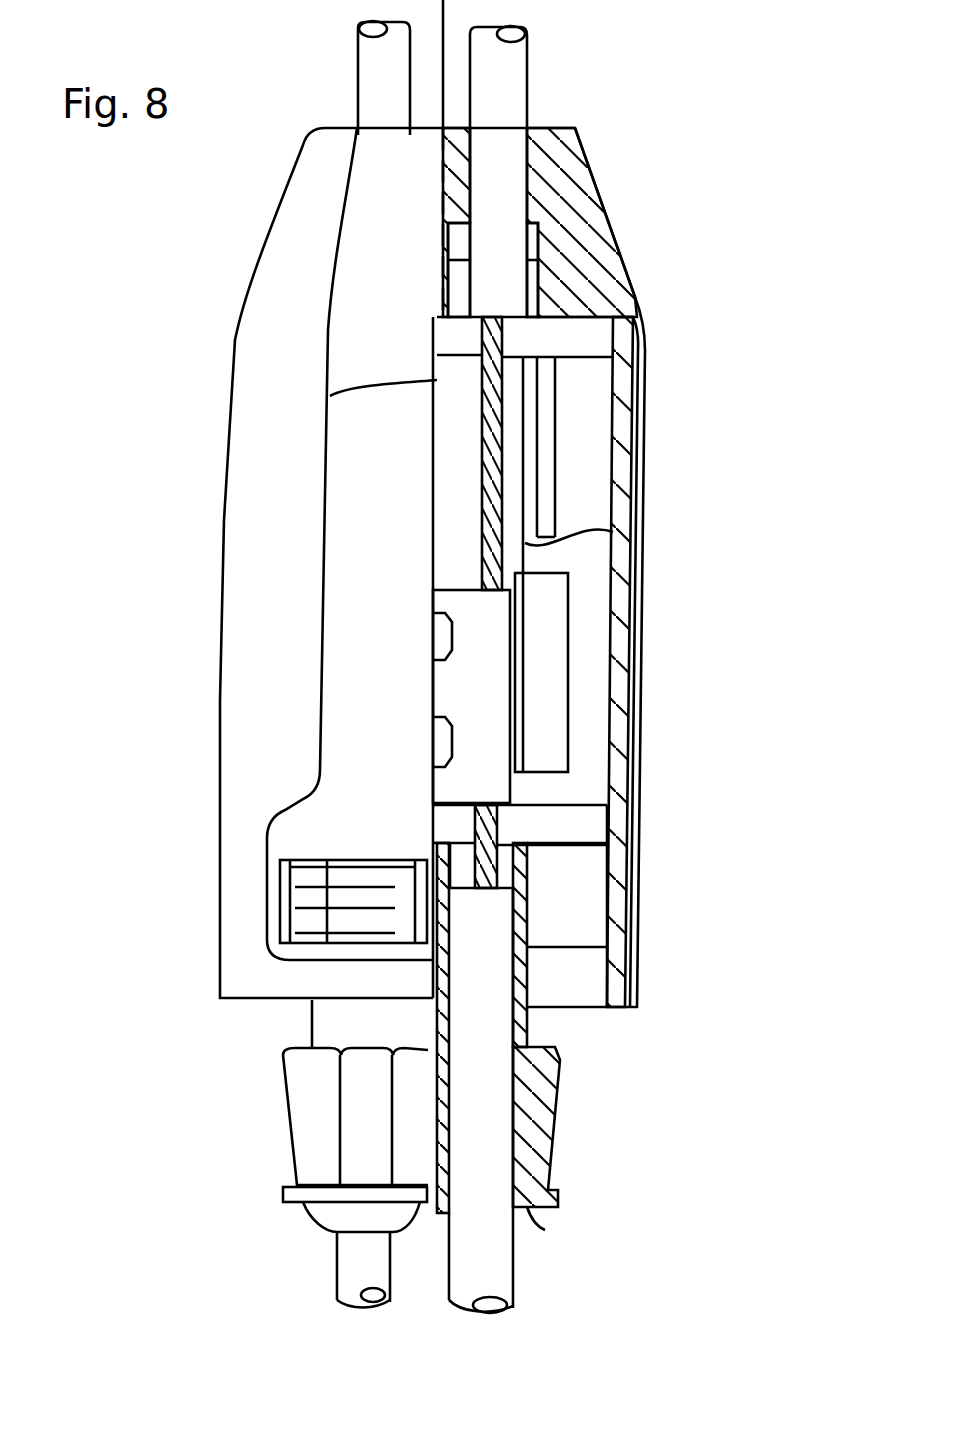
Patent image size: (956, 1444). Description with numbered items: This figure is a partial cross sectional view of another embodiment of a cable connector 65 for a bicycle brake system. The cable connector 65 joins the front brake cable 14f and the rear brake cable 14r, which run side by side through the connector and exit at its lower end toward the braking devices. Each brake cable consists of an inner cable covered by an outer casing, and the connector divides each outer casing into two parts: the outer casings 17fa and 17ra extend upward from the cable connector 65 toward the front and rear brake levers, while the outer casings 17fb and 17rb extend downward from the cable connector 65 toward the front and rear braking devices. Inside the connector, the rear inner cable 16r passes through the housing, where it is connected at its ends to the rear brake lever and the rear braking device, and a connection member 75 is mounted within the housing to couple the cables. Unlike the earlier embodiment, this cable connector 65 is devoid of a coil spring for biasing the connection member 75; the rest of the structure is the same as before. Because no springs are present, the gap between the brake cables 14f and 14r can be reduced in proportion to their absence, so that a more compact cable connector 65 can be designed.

The cable connector 65 is at (648, 285).
The connection member 75 is at (493, 672).
The rear inner cable 16r is at (497, 827).
The front brake cable 14f is at (313, 1242).
The rear brake cable 14r is at (552, 1240).
The front outer casing (lever side) 17fa is at (372, 62).
The rear outer casing (lever side) 17ra is at (508, 82).
The front outer casing (braking device side) 17fb is at (357, 1265).
The rear outer casing (braking device side) 17rb is at (487, 1275).